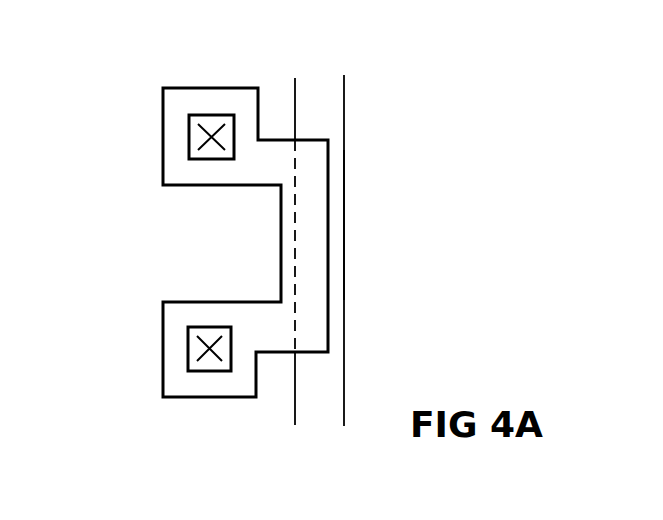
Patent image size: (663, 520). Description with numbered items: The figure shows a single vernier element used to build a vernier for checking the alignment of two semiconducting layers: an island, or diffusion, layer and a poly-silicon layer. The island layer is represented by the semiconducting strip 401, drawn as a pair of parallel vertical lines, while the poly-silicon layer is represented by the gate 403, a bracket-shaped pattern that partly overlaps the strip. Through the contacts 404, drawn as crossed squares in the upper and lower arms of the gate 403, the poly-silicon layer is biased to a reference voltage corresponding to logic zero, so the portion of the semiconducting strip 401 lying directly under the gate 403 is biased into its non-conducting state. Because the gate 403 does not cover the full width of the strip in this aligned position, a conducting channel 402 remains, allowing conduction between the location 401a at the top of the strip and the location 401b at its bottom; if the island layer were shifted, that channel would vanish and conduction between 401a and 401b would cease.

The semiconducting strip 401 is at (344, 84).
The location on semiconducting strip 401a is at (317, 87).
The location on semiconducting strip 401b is at (320, 420).
The conducting channel 402 is at (344, 228).
The gate 403 is at (238, 186).
The contacts 404 is at (189, 131).